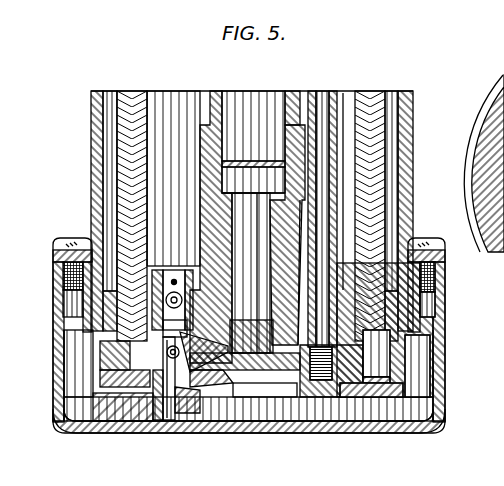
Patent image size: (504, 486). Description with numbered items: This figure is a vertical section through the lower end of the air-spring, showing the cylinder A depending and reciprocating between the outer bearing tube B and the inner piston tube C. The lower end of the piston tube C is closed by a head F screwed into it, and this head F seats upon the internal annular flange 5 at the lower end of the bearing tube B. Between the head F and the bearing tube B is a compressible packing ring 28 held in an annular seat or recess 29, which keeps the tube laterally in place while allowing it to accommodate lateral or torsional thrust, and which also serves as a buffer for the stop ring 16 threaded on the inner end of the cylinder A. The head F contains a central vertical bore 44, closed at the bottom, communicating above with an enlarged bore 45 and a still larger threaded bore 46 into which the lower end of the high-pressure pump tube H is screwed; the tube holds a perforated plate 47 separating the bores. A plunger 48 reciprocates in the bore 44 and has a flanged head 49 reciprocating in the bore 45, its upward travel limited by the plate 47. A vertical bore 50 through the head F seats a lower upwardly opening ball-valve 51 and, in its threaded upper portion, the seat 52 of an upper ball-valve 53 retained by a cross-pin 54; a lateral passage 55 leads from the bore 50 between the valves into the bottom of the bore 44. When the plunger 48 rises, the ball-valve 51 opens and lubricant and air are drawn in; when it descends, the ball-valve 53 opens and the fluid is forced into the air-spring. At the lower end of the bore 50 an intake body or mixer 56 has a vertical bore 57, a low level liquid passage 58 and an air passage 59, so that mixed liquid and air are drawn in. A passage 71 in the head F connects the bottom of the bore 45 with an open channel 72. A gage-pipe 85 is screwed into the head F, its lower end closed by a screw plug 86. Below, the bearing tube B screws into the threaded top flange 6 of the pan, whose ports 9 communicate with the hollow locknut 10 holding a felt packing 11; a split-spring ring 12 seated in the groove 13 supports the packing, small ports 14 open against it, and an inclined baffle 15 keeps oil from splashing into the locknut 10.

The cylinder A is at (121, 120).
The bearing tube B is at (97, 141).
The piston tube C is at (137, 168).
The high-pressure pump tube H is at (295, 115).
The head F is at (245, 227).
The threaded bore 46 is at (288, 125).
The perforated plate 47 is at (240, 162).
The enlarged bore 45 is at (243, 183).
The flanged head 49 is at (237, 196).
The gage-pipe 85 is at (337, 147).
The passage 71 is at (300, 245).
The open channel 72 is at (340, 293).
The split-spring ring 12 is at (62, 303).
The stop ring 16 is at (92, 248).
The valve seat 52 is at (158, 268).
The cross-pin 54 is at (174, 279).
The upper ball-valve 53 is at (187, 288).
The vertical bore 50 is at (175, 339).
The lateral passage 55 is at (204, 352).
The locknut 10 is at (412, 253).
The packing 11 is at (423, 255).
The ports 14 is at (437, 265).
The groove 13 is at (440, 294).
The top flange 6 is at (447, 312).
The ports 9 is at (448, 333).
The baffle 15 is at (440, 375).
The internal annular flange 5 is at (78, 418).
The lower ball-valve 51 is at (104, 408).
The air passage 59 is at (135, 410).
The low level liquid passage 58 is at (158, 400).
The vertical bore 57 is at (167, 420).
The intake body or mixer 56 is at (197, 415).
The plunger 48 is at (240, 322).
The central vertical bore 44 is at (278, 322).
The screw plug 86 is at (320, 385).
The annular seat or recess 29 is at (370, 390).
The compressible packing ring 28 is at (383, 400).